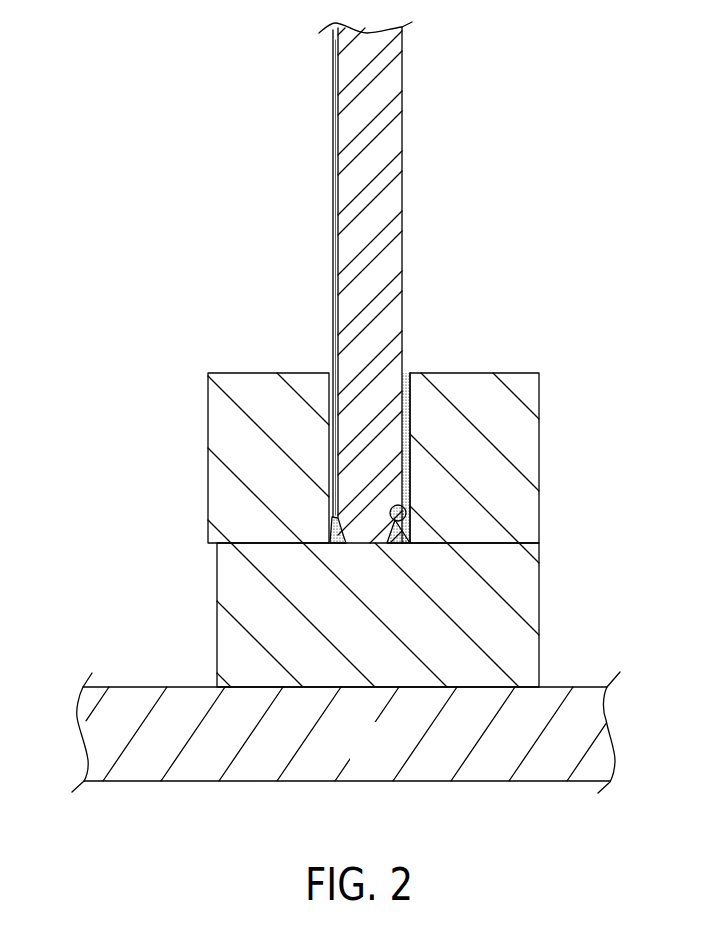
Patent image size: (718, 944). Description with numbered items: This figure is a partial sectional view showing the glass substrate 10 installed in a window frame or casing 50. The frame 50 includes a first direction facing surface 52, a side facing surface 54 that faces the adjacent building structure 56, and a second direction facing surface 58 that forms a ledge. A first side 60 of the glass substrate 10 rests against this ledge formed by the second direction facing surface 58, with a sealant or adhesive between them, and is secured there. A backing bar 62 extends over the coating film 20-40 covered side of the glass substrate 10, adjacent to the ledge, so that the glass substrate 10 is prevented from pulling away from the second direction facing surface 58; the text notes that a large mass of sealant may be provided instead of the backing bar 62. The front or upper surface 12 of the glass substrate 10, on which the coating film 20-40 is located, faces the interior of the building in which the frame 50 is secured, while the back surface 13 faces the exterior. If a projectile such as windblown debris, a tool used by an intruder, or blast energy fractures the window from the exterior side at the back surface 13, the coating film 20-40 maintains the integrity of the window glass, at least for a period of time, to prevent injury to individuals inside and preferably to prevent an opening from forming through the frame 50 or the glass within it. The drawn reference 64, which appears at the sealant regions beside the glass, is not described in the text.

The glass substrate 10 is at (388, 207).
The upper surface 12 is at (334, 134).
The back surface 13 is at (402, 128).
The coating film 20-40 is at (333, 192).
The window frame 50 is at (587, 400).
The first direction facing surface 52 is at (540, 583).
The side facing surface 54 is at (523, 689).
The building structure 56 is at (217, 638).
The second direction facing surface 58 is at (410, 527).
The first side 60 is at (407, 403).
The backing bar 62 is at (235, 427).
The adhesive fillet 64 is at (329, 523).